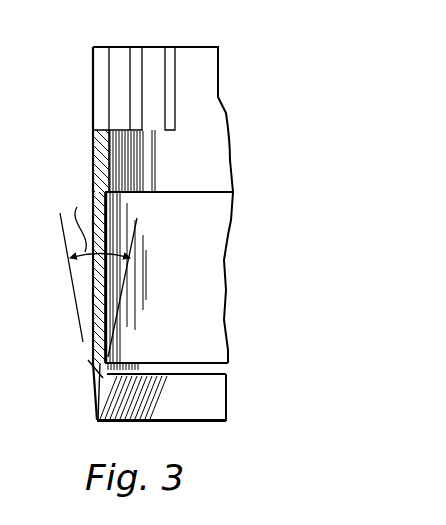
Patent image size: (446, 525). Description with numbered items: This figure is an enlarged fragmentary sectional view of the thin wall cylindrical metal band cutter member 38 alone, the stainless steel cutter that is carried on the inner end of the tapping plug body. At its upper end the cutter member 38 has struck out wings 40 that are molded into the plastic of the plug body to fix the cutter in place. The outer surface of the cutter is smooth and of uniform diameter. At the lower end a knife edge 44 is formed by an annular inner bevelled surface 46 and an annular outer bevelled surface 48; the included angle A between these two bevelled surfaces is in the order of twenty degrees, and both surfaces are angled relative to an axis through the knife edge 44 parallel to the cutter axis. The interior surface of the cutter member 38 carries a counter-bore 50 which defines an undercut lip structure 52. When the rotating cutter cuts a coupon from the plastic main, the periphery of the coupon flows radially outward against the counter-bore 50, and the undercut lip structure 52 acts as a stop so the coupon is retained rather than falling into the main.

The thin wall cylindrical metal band cutter member 38 is at (93, 155).
The struck out wings 40 is at (120, 47).
The knife edge 44 is at (97, 421).
The annular inner bevelled surface 46 is at (115, 397).
The annular outer bevelled surface 48 is at (97, 381).
The counter-bore 50 is at (100, 298).
The undercut lip structure 52 is at (108, 361).
The included angle A is at (86, 268).